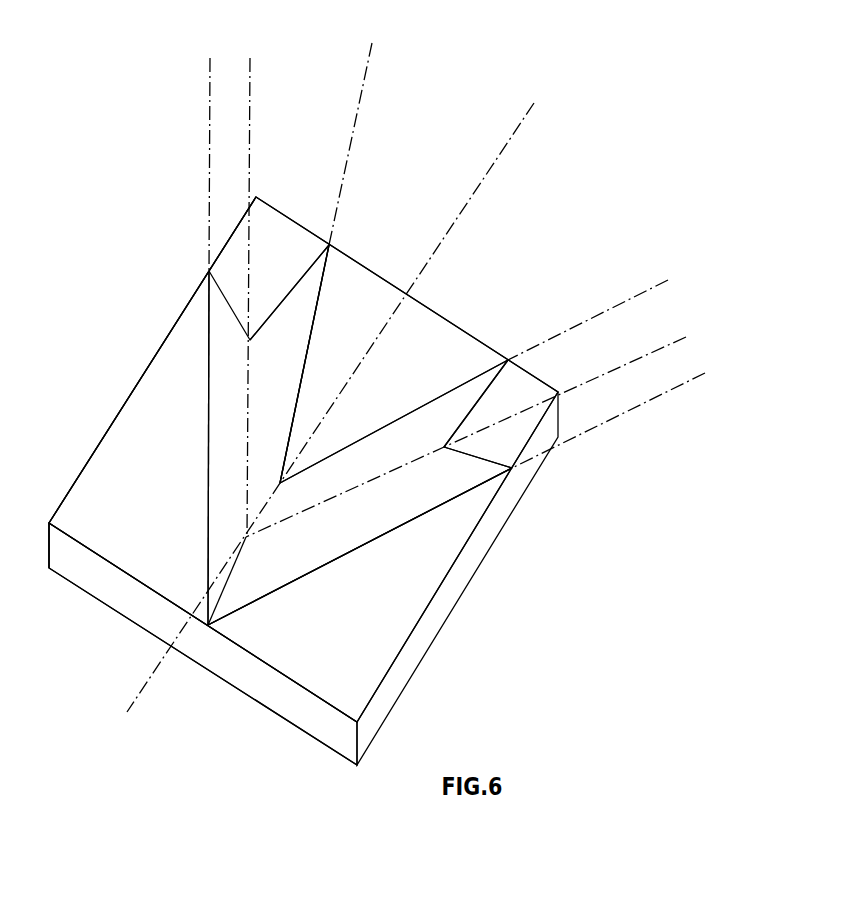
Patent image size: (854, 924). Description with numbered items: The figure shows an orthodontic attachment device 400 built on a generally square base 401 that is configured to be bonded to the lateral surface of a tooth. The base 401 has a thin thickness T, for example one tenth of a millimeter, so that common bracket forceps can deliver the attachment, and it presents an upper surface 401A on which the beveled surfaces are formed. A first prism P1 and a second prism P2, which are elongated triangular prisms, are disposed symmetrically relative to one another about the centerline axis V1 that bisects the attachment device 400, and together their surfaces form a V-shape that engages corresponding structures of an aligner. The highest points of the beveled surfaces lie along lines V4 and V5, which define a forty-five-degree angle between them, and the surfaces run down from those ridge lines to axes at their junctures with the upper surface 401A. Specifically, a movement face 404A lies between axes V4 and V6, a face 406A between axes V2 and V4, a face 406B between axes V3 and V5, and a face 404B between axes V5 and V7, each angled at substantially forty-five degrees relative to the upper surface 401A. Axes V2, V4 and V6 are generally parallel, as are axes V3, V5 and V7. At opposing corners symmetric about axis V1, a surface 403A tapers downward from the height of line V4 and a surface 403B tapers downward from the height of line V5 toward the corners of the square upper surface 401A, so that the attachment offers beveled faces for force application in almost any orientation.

The attachment device 400 is at (438, 267).
The base 401 is at (420, 642).
The upper surface 401A is at (288, 648).
The surface 403A is at (237, 255).
The surface 403B is at (522, 392).
The movement face 404A is at (223, 485).
The movement face 404B is at (411, 502).
The movement face 406A is at (277, 383).
The movement face 406B is at (443, 413).
The first prism P1 is at (198, 312).
The second prism P2 is at (480, 505).
The thickness T is at (35, 545).
The axis V1 is at (331, 412).
The axis V2 is at (356, 129).
The axis V3 is at (601, 313).
The line V4 is at (253, 282).
The line V5 is at (480, 430).
The axis V6 is at (210, 149).
The axis V7 is at (623, 414).